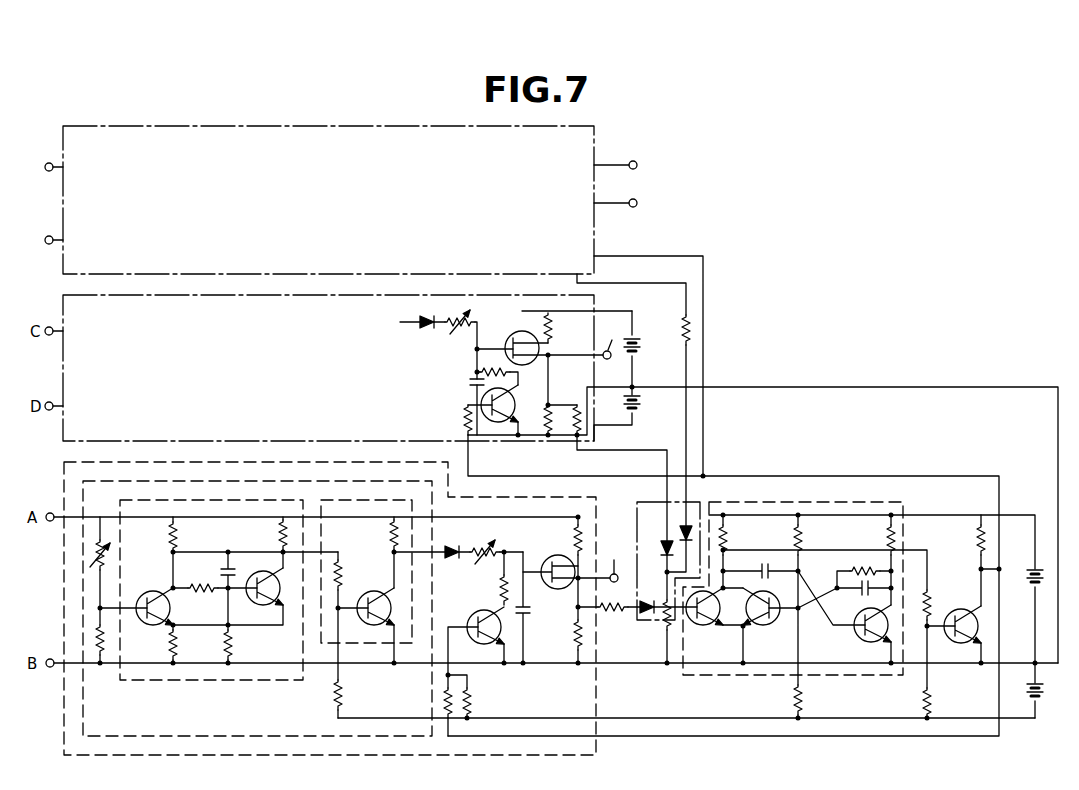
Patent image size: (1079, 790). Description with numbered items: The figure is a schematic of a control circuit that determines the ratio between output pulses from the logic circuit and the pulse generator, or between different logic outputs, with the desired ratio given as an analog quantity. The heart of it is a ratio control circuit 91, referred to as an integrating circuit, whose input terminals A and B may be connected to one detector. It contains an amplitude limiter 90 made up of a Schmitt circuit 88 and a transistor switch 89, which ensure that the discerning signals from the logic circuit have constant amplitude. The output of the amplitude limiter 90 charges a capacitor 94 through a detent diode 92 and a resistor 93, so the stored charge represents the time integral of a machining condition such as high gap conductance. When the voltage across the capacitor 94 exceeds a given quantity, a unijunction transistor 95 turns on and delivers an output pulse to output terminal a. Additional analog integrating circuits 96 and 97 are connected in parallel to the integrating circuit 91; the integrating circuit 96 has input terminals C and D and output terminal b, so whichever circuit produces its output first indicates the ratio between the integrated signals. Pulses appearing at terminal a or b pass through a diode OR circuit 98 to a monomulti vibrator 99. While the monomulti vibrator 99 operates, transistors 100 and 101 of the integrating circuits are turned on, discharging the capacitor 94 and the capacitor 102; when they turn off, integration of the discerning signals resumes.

The Schmitt circuit 88 is at (228, 682).
The transistor switch 89 is at (378, 646).
The amplitude limiter 90 is at (308, 739).
The ratio control circuit 91 is at (404, 758).
The detent diode 92 is at (452, 545).
The resistor 93 is at (487, 546).
The capacitor 94 is at (531, 614).
The unijunction transistor 95 is at (556, 555).
The analog integrating circuit 96 is at (311, 379).
The analog integrating circuit 97 is at (323, 217).
The diode OR circuit 98 is at (635, 503).
The monomulti vibrator 99 is at (757, 677).
The transistor 100 is at (477, 617).
The transistor 101 is at (503, 421).
The capacitor 102 is at (470, 381).